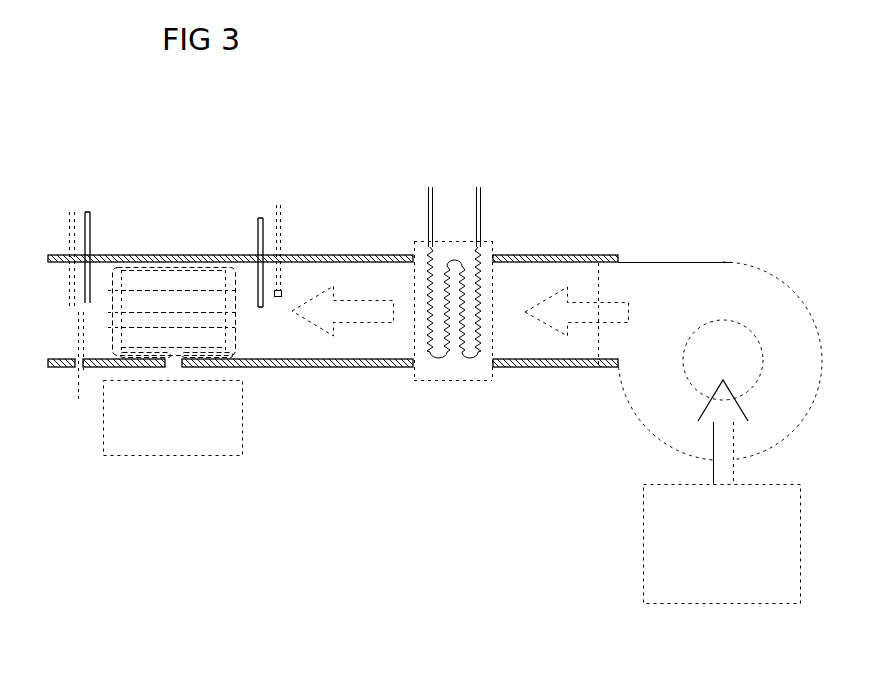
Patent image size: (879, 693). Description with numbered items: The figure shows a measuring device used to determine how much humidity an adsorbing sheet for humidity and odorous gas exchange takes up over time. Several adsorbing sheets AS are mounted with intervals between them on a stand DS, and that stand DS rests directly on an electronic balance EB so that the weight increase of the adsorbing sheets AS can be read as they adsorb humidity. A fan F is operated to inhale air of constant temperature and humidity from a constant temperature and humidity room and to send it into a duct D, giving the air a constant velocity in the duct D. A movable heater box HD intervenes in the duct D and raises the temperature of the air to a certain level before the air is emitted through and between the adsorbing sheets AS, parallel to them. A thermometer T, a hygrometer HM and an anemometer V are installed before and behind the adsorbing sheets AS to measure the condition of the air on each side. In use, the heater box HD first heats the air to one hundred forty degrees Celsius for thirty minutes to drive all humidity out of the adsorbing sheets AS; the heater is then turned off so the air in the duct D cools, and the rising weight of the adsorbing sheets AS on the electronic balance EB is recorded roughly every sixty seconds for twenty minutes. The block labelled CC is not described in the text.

The duct D is at (334, 367).
The hygrometer HM is at (114, 203).
The thermometer T is at (174, 240).
The stand DS is at (176, 255).
The adsorbing sheet AS is at (237, 328).
The anemometer V is at (76, 393).
The electronic balance EB is at (190, 428).
The heater box HD is at (452, 382).
The fan F is at (767, 270).
The control computer CC is at (738, 554).